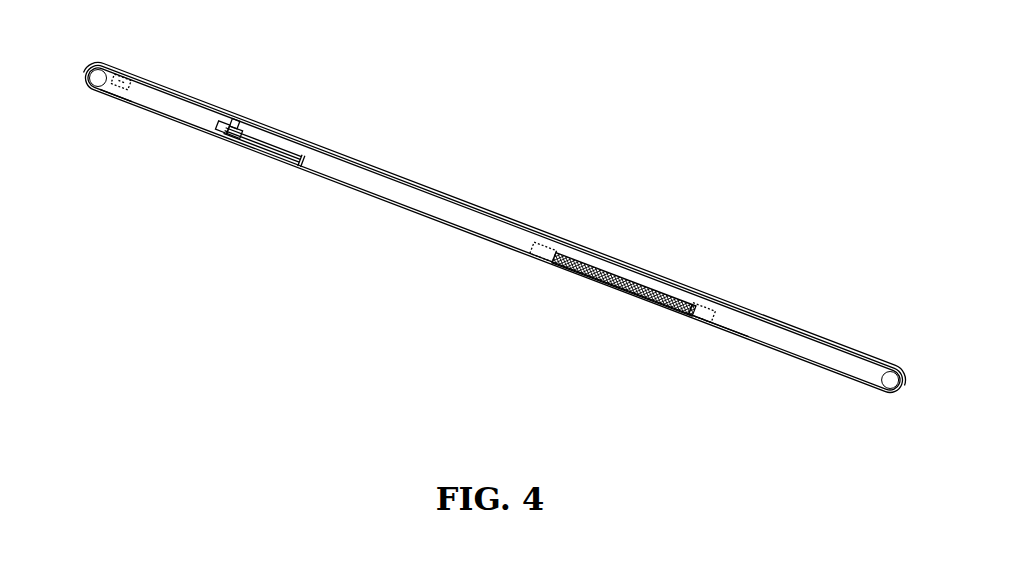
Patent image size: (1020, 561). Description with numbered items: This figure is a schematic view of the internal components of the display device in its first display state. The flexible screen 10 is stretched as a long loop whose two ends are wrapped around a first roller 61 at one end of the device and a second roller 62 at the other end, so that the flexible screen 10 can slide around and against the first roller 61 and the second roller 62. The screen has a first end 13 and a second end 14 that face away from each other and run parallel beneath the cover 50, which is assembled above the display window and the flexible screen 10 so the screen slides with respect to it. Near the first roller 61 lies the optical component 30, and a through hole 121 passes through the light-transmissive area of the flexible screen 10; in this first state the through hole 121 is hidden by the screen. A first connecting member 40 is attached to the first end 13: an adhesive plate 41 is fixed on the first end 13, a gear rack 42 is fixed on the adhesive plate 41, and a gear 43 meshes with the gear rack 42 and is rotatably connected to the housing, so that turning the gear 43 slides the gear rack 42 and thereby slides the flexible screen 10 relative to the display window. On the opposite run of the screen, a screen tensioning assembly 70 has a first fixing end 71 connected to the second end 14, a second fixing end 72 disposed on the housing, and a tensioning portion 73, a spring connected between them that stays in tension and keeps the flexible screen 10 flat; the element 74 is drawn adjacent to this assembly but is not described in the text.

The flexible screen 10 is at (262, 127).
The first end 13 is at (292, 168).
The second end 14 is at (727, 332).
The optical component 30 is at (127, 73).
The first connecting member 40 is at (195, 159).
The adhesive plate 41 is at (233, 140).
The gear rack 42 is at (216, 137).
The gear 43 is at (241, 138).
The cover 50 is at (197, 93).
The first roller 61 is at (93, 83).
The second roller 62 is at (892, 386).
The screen tensioning assembly 70 is at (576, 319).
The first fixing end 71 is at (686, 315).
The second fixing end 72 is at (548, 262).
The tensioning portion 73 is at (633, 293).
The second connecting block 74 is at (700, 323).
The through hole 121 is at (114, 97).